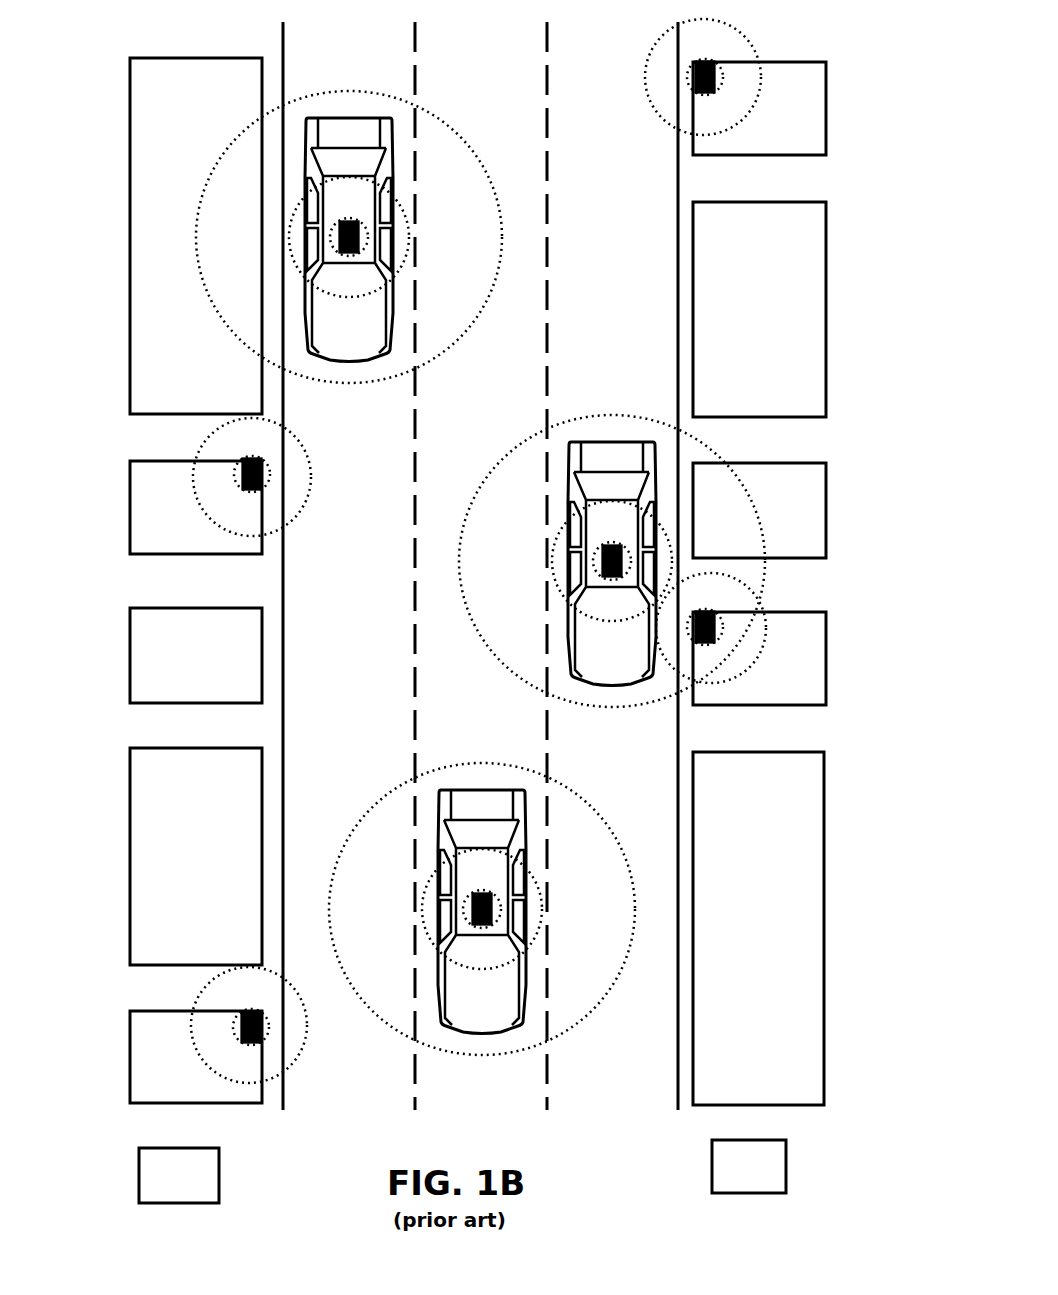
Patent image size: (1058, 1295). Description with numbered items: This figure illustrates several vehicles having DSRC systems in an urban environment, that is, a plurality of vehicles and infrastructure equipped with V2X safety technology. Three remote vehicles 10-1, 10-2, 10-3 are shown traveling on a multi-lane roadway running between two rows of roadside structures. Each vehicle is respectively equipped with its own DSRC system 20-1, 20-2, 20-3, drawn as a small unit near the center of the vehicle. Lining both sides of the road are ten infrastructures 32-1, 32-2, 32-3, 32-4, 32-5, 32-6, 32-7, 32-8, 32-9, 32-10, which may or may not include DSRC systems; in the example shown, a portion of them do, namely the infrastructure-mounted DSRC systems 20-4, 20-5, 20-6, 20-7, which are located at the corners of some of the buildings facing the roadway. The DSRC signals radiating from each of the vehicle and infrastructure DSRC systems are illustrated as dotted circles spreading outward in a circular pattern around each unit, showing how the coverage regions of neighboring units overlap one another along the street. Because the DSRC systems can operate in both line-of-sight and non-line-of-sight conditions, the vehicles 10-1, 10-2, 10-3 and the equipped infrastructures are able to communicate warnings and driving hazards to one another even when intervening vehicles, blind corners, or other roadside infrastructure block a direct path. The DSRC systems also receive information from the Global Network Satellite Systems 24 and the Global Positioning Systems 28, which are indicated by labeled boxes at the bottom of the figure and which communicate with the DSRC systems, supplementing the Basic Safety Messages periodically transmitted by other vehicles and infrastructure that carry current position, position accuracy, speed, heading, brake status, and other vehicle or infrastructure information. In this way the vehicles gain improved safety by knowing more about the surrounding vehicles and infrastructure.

The vehicle 10-1 is at (352, 118).
The vehicle 10-2 is at (482, 790).
The vehicle 10-3 is at (614, 442).
The DSRC system 20-1 is at (340, 238).
The DSRC system 20-2 is at (472, 910).
The DSRC system 20-3 is at (608, 565).
The DSRC system 20-4 is at (242, 476).
The DSRC system 20-5 is at (242, 1027).
The DSRC system 20-6 is at (695, 77).
The DSRC system 20-7 is at (715, 628).
The infrastructure 32-1 is at (130, 237).
The infrastructure 32-2 is at (130, 507).
The infrastructure 32-3 is at (130, 656).
The infrastructure 32-4 is at (130, 856).
The infrastructure 32-5 is at (130, 1059).
The infrastructure 32-6 is at (826, 107).
The infrastructure 32-7 is at (826, 309).
The infrastructure 32-8 is at (826, 510).
The infrastructure 32-9 is at (826, 657).
The infrastructure 32-10 is at (823, 926).
The Global Network Satellite Systems 24 is at (139, 1173).
The Global Positioning Systems 28 is at (712, 1166).